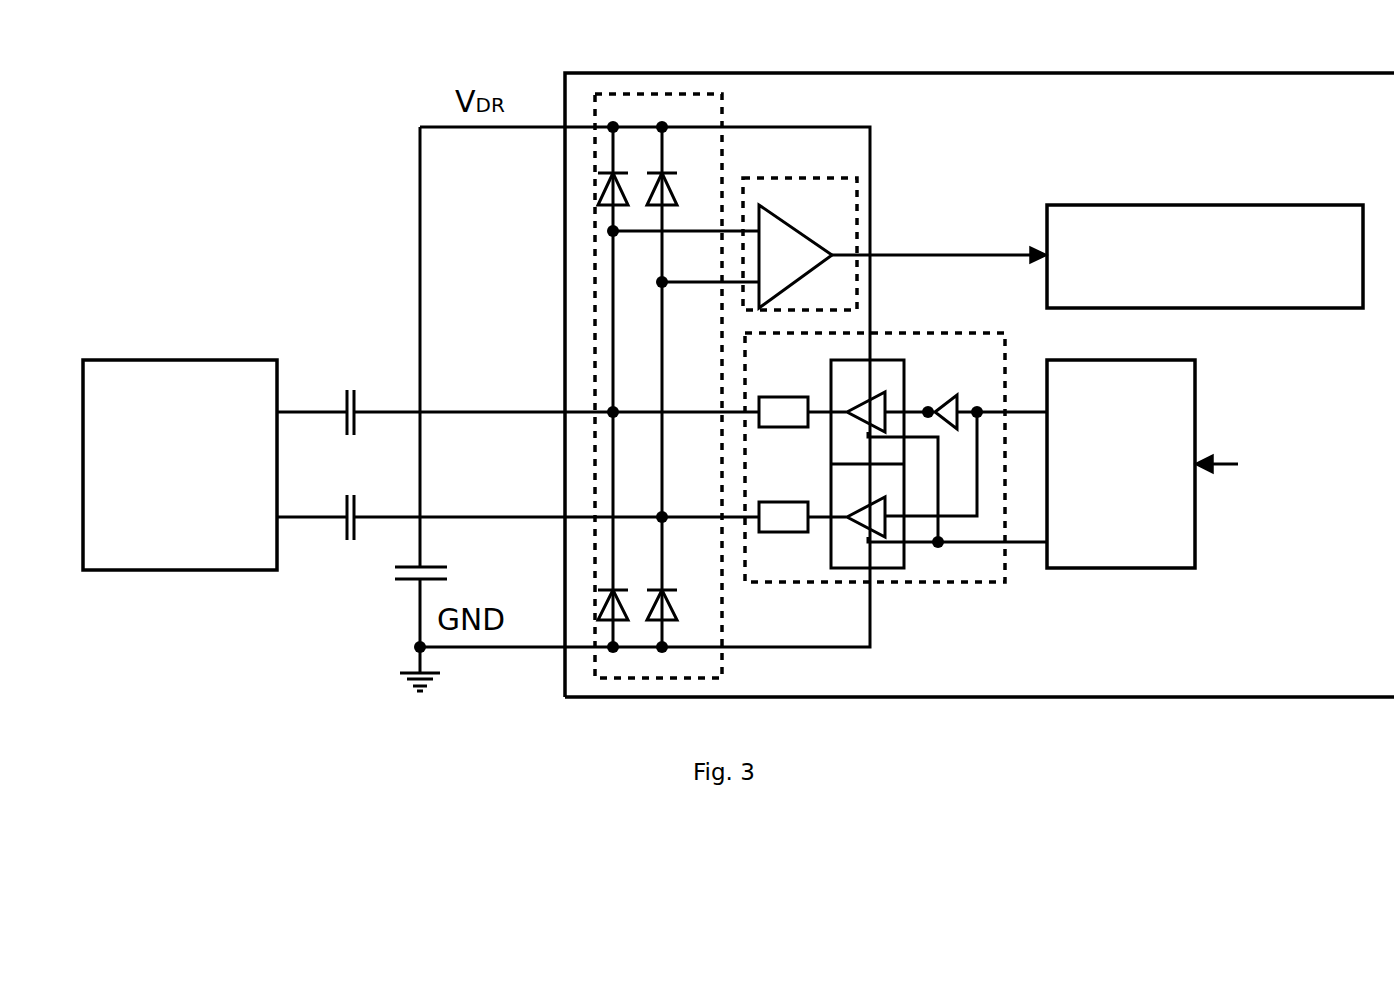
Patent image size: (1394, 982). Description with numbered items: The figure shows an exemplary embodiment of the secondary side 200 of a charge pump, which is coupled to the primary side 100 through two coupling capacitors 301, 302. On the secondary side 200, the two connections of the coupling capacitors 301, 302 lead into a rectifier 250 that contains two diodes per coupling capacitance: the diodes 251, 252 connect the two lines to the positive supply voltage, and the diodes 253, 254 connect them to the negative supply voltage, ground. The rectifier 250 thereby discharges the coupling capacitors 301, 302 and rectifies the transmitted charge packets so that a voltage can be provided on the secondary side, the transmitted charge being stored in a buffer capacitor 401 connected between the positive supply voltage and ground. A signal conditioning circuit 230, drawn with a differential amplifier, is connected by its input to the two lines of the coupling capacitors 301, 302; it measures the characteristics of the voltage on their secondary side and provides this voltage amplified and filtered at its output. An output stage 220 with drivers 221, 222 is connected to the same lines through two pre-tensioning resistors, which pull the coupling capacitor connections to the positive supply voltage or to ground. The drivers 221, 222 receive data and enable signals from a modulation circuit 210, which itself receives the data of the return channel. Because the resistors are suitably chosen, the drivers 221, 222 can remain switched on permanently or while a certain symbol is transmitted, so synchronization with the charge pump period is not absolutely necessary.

The primary side 100 is at (180, 465).
The secondary side 200 is at (979, 385).
The modulation circuit 210 is at (1216, 464).
The output stage 220 is at (1007, 603).
The driver 221 is at (918, 357).
The driver 222 is at (920, 562).
The signal conditioning circuit 230 is at (845, 178).
The rectifier 250 is at (733, 110).
The diode 251 is at (627, 174).
The diode 252 is at (676, 171).
The diode 253 is at (627, 582).
The diode 254 is at (676, 579).
The coupling capacitor 301 is at (518, 393).
The coupling capacitor 302 is at (518, 501).
The buffer capacitor 401 is at (393, 592).